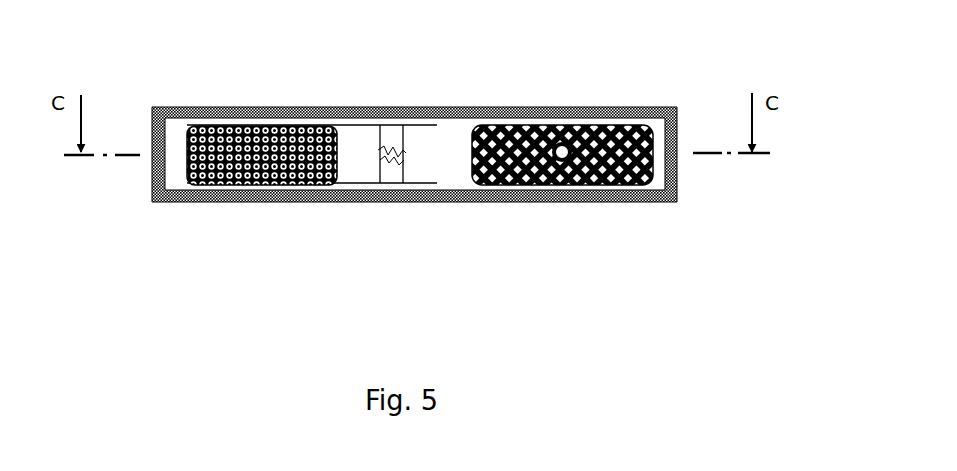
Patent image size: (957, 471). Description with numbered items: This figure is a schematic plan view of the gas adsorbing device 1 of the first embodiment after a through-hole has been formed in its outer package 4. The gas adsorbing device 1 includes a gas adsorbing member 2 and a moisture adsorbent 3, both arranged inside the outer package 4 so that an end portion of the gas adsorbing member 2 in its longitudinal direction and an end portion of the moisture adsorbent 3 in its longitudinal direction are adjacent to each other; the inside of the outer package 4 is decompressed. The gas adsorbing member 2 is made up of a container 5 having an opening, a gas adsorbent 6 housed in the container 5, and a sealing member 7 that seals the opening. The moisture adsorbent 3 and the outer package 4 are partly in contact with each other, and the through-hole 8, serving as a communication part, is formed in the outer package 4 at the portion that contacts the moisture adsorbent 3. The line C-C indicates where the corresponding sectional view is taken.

The gas adsorbing device 1 is at (318, 100).
The gas adsorbing member 2 is at (183, 140).
The moisture adsorbent 3 is at (515, 140).
The outer package 4 is at (447, 112).
The container 5 is at (357, 183).
The gas adsorbent 6 is at (262, 183).
The sealing member 7 is at (388, 143).
The through-hole 8 is at (560, 146).